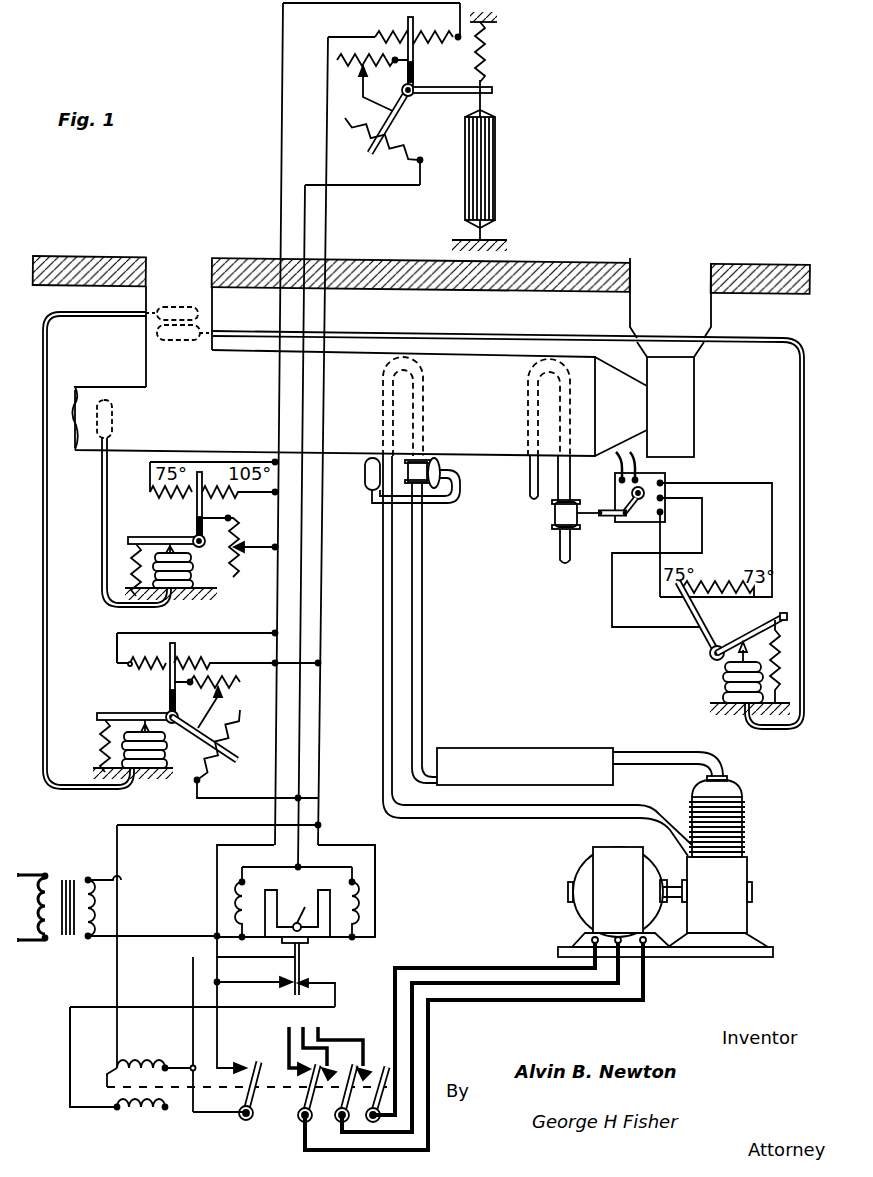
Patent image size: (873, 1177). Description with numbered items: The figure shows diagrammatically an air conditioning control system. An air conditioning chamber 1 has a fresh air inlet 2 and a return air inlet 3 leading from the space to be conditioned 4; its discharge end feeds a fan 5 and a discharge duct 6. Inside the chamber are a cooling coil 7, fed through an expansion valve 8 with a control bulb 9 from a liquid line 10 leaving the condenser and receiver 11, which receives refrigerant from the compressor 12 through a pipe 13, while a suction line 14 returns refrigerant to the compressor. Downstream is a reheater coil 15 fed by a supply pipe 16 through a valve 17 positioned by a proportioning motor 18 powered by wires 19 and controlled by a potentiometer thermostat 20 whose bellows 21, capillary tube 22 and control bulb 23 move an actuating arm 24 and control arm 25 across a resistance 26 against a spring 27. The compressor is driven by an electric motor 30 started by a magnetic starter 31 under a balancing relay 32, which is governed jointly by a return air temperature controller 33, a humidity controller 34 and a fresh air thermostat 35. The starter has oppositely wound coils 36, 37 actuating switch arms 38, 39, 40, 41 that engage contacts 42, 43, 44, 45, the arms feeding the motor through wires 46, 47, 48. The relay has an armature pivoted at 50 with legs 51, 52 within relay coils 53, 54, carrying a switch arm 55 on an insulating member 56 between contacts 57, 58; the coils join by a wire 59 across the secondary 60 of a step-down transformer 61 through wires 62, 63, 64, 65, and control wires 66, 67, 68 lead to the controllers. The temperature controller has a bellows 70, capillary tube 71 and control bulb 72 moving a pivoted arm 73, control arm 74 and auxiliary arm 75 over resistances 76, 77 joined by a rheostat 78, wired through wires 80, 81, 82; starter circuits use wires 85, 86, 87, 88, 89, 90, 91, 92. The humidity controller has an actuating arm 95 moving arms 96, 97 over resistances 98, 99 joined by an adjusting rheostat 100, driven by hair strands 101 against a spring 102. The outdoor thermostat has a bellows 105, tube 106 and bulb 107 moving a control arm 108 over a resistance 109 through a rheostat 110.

The air conditioning chamber 1 is at (365, 355).
The fresh air inlet 2 is at (78, 400).
The return air inlet 3 is at (146, 298).
The space to be conditioned 4 is at (193, 52).
The fan 5 is at (684, 398).
The discharge duct 6 is at (630, 304).
The cooling coil 7 is at (383, 393).
The expansion valve 8 is at (425, 462).
The control bulb 9 is at (365, 472).
The liquid line 10 is at (422, 568).
The condenser and receiver 11 is at (525, 755).
The compressor 12 is at (700, 793).
The pipe 13 is at (645, 752).
The suction line 14 is at (383, 600).
The reheater coil 15 is at (536, 382).
The supply pipe 16 is at (560, 548).
The valve 17 is at (555, 517).
The proportioning type motor 18 is at (640, 522).
The wires 19 is at (632, 459).
The potentiometer type thermostat 20 is at (700, 664).
The bellows 21 is at (723, 690).
The capillary tube 22 is at (800, 452).
The control bulb 23 is at (193, 341).
The actuating arm 24 is at (750, 630).
The control arm 25 is at (690, 610).
The resistance 26 is at (718, 578).
The spring 27 is at (764, 661).
The electric motor 30 is at (579, 868).
The magnetic starter 31 is at (68, 1121).
The balancing relay 32 is at (210, 873).
The return air temperature controller 33 is at (103, 675).
The space relative humidity controller 34 is at (576, 42).
The fresh air thermostat 35 is at (127, 508).
The coil 36 is at (140, 1068).
The coil 37 is at (140, 1118).
The switch arm 38 is at (240, 1098).
The switch arm 39 is at (300, 1106).
The switch arm 40 is at (340, 1106).
The switch arm 41 is at (372, 1106).
The contact 42 is at (252, 1068).
The contact 43 is at (290, 1072).
The contact 44 is at (325, 1053).
The contact 45 is at (351, 1053).
The wire 46 is at (452, 966).
The wire 47 is at (485, 983).
The wire 48 is at (506, 1000).
The armature pivot 50 is at (306, 914).
The leg 51 is at (280, 892).
The leg 52 is at (320, 896).
The relay coil 53 is at (242, 890).
The relay coil 54 is at (358, 910).
The switch arm 55 is at (300, 972).
The insulating member 56 is at (285, 942).
The contact 57 is at (278, 978).
The contact 58 is at (312, 983).
The wire 59 is at (335, 868).
The secondary 60 is at (88, 940).
The step-down transformer 61 is at (62, 870).
The wire 62 is at (168, 934).
The wire 63 is at (110, 876).
The wire 64 is at (155, 826).
The wire 65 is at (376, 872).
The control wire 66 is at (370, 188).
The control wire 67 is at (282, 157).
The control wire 68 is at (327, 248).
The bellows 70 is at (162, 745).
The capillary tube 71 is at (47, 740).
The control bulb 72 is at (190, 306).
The pivoted arm 73 is at (120, 714).
The control arm 74 is at (165, 676).
The auxiliary arm 75 is at (205, 762).
The resistance 76 is at (172, 660).
The resistance 77 is at (236, 712).
The rheostat 78 is at (240, 700).
The wire 80 is at (210, 634).
The wire 81 is at (262, 674).
The wire 82 is at (248, 805).
The wire 85 is at (215, 945).
The wire 86 is at (228, 985).
The wire 87 is at (193, 982).
The wire 88 is at (117, 1048).
The wire 89 is at (217, 1050).
The wire 90 is at (215, 1112).
The wire 91 is at (70, 1040).
The wire 92 is at (107, 1075).
The actuating arm 95 is at (452, 93).
The arm 96 is at (413, 50).
The arm 97 is at (392, 120).
The resistance 98 is at (383, 32).
The resistance 99 is at (376, 160).
The adjusting rheostat 100 is at (375, 58).
The strands 101 is at (484, 170).
The spring 102 is at (485, 50).
The bellows 105 is at (195, 582).
The tube 106 is at (102, 565).
The bulb 107 is at (123, 419).
The control arm 108 is at (203, 508).
The resistance 109 is at (176, 498).
The rheostat 110 is at (236, 524).